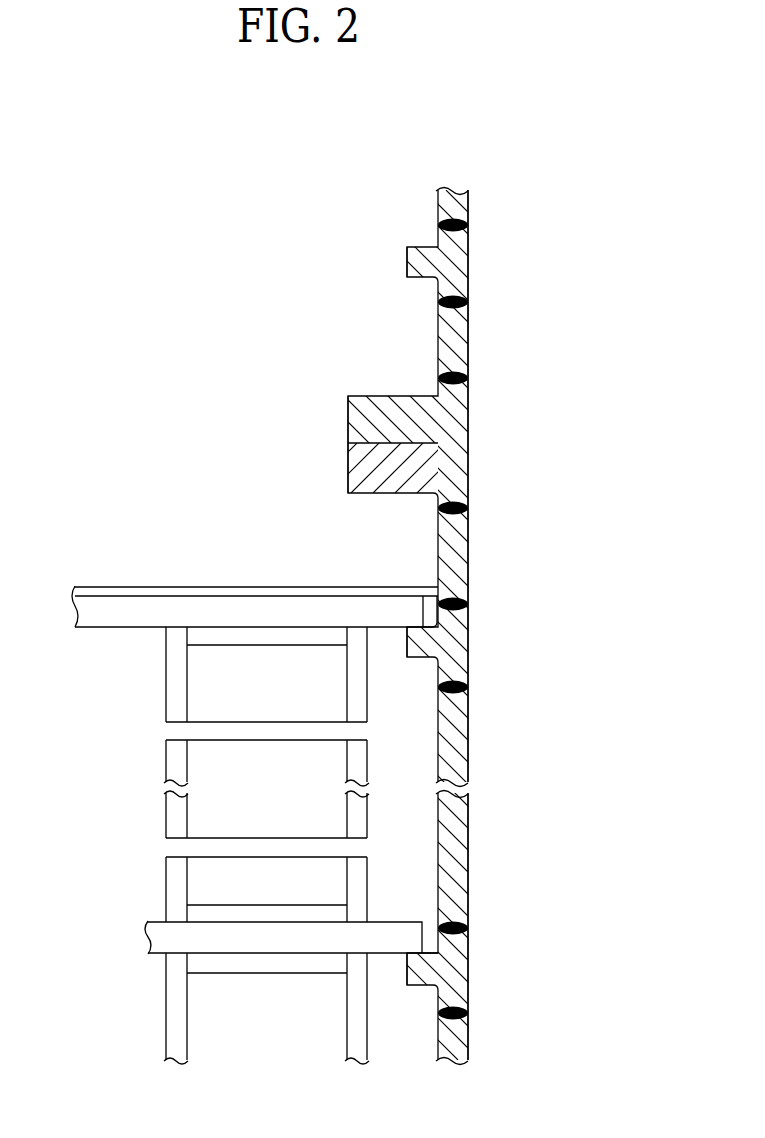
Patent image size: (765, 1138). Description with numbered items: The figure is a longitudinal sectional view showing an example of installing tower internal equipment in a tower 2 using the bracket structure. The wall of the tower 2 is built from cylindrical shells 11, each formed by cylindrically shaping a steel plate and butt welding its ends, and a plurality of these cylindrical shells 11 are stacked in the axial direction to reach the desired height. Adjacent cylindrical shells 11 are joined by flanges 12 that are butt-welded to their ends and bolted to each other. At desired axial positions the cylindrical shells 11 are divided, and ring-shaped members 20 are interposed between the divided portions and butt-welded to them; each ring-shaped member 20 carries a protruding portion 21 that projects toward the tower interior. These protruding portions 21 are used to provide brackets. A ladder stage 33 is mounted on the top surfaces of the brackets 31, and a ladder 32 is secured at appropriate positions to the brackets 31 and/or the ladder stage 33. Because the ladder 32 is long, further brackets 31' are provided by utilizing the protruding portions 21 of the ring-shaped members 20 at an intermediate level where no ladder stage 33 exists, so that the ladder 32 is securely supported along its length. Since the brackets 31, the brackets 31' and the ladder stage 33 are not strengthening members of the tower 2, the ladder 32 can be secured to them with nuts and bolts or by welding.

The tower 2 is at (561, 166).
The cylindrical shell 11 is at (470, 212).
The flange 12 is at (368, 396).
The ring-shaped member 20 is at (470, 262).
The protruding portion 21 is at (413, 246).
The bracket 31 is at (254, 637).
The bracket 31' is at (291, 903).
The ladder 32 is at (166, 709).
The ladder stage 33 is at (163, 587).